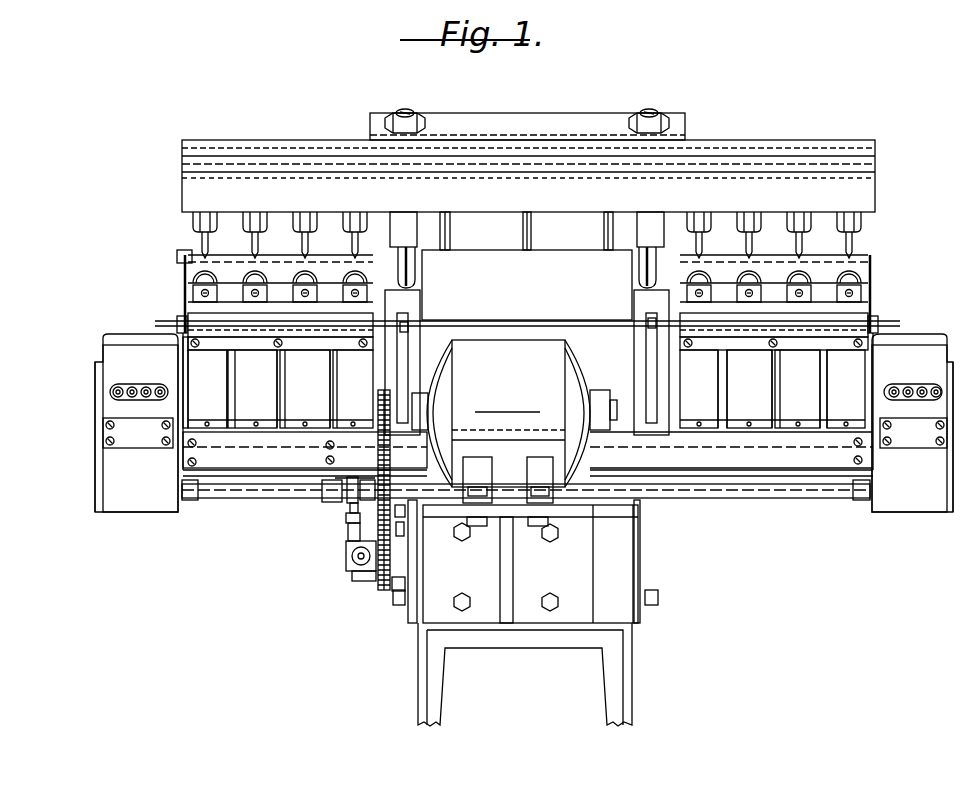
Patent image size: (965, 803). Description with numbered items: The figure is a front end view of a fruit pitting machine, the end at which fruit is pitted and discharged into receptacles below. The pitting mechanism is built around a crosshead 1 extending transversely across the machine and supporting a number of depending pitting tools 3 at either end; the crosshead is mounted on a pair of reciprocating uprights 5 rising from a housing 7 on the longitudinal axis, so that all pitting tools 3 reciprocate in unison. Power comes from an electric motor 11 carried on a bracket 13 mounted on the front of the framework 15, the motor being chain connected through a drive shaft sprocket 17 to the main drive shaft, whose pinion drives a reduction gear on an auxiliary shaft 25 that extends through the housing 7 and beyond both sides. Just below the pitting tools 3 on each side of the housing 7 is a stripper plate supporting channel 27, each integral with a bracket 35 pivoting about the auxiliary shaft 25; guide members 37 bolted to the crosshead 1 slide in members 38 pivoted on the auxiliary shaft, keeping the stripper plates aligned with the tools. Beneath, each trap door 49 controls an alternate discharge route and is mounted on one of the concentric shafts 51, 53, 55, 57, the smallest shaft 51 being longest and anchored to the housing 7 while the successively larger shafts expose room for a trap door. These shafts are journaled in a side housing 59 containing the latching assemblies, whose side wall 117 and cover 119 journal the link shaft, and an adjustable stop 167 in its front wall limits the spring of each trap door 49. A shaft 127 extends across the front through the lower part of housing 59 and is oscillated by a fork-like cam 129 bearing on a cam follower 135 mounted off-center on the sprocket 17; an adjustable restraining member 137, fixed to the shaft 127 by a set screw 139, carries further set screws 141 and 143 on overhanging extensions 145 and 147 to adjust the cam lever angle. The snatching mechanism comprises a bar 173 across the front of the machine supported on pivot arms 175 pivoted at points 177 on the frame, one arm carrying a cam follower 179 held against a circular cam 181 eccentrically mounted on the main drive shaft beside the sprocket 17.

The crosshead 1 is at (870, 182).
The pitting tools 3 is at (193, 231).
The reciprocating uprights 5 is at (450, 235).
The housing 7 is at (552, 258).
The electric motor 11 is at (577, 373).
The bracket 13 is at (578, 509).
The framework 15 is at (632, 630).
The drive shaft sprocket 17 is at (392, 590).
The auxiliary shaft 25 is at (376, 370).
The stripper plate supporting channel 27 is at (185, 272).
The brackets 35 is at (410, 313).
The guide members 37 is at (416, 278).
The member 38 is at (412, 327).
The trap door 49 is at (215, 396).
The concentric shaft 51 is at (378, 430).
The concentric shaft 53 is at (330, 430).
The concentric shaft 55 is at (286, 430).
The concentric shaft 57 is at (236, 430).
The housing 59 is at (108, 472).
The side wall 117 is at (186, 372).
The cover 119 is at (95, 396).
The shaft 127 is at (232, 498).
The cam 129 is at (348, 568).
The cam follower 135 is at (360, 582).
The adjustable restraining member 137 is at (350, 505).
The set screw 139 is at (340, 500).
The set screw 141 is at (356, 470).
The set screw 143 is at (356, 540).
The overhanging extension 145 is at (340, 484).
The overhanging extension 147 is at (352, 518).
The adjustable stop 167 is at (146, 374).
The bar 173 is at (560, 305).
The pivot arms 175 is at (408, 360).
The pivot points 177 is at (396, 604).
The cam follower 179 is at (408, 550).
The circular cam 181 is at (410, 527).